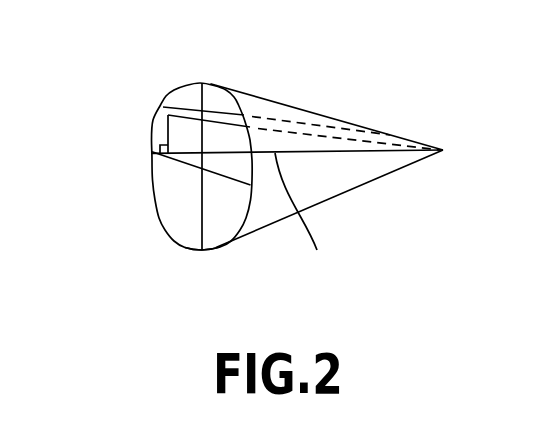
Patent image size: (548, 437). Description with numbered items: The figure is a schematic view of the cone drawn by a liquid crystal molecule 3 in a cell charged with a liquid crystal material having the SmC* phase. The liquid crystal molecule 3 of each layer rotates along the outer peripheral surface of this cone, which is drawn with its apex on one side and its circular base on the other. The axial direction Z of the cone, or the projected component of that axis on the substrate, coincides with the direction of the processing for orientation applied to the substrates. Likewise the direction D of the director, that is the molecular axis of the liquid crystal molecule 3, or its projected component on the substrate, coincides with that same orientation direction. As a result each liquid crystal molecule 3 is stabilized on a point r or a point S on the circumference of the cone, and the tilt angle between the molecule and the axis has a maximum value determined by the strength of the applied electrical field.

The liquid crystal molecule 3 is at (161, 108).
The direction of the director D is at (160, 108).
The point on the circumference of the cone r is at (204, 153).
The axial direction Z is at (443, 150).
The point on the circumference of the cone S is at (202, 263).